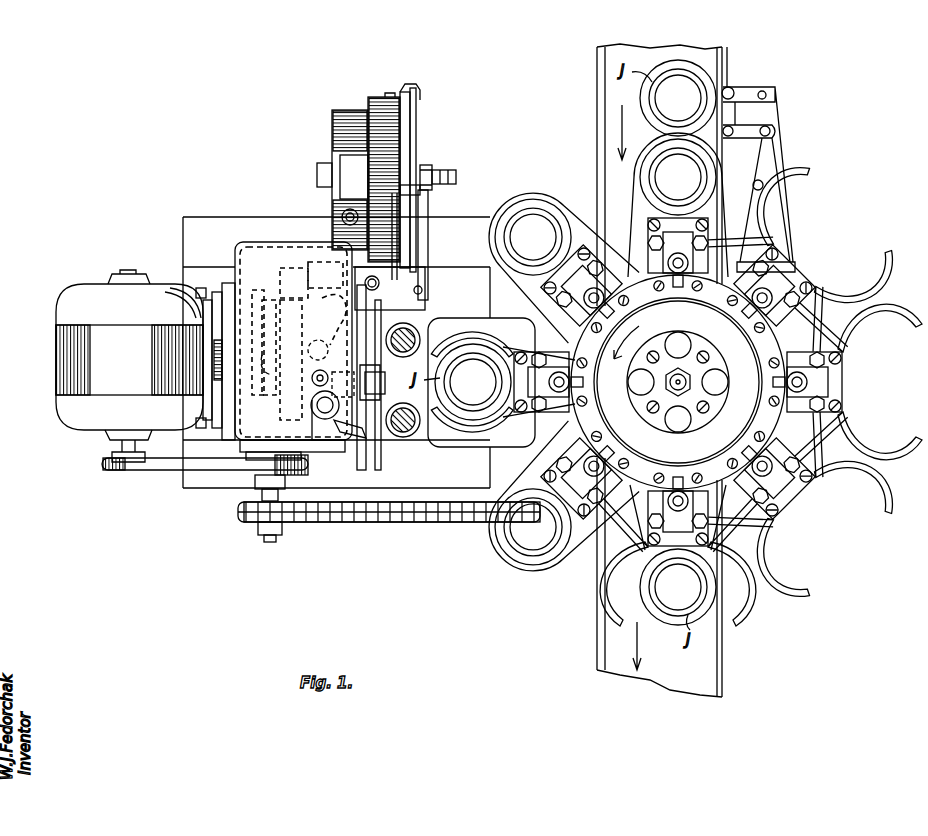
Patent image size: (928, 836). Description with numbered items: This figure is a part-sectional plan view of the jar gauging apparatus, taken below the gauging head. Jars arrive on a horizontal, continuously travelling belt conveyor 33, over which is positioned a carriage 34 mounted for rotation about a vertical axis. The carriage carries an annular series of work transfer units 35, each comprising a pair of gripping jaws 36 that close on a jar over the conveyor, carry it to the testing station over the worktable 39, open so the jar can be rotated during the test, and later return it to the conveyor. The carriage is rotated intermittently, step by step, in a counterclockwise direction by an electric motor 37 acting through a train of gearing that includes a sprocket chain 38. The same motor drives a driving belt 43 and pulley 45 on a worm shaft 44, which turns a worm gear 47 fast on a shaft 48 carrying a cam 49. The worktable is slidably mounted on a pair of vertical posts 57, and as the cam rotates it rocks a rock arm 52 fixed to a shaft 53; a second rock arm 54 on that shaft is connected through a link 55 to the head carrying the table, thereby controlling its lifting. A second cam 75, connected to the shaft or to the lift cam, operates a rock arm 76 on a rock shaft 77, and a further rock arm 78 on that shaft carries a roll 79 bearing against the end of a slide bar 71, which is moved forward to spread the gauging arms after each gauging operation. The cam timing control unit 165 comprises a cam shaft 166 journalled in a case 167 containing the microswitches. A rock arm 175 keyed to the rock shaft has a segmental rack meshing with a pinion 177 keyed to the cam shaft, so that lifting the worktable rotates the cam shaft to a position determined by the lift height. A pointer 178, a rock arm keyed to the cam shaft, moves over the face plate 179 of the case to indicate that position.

The belt conveyor 33 is at (612, 636).
The carriage 34 is at (730, 338).
The work transfer unit 35 is at (830, 384).
The gripping jaws 36 is at (476, 330).
The electric motor 37 is at (62, 353).
The sprocket chain 38 is at (432, 522).
The worktable 39 is at (495, 440).
The driving belt 43 is at (170, 468).
The worm shaft 44 is at (270, 542).
The pulley 45 is at (300, 470).
The worm gear 47 is at (258, 367).
The shaft 48 is at (262, 345).
The cam 49 is at (295, 405).
The rock arm 52 is at (299, 276).
The shaft 53 is at (330, 266).
The rock arm 54 is at (366, 318).
The link 55 is at (380, 385).
The vertical posts 57 is at (408, 432).
The slide bar 71 is at (350, 388).
The cam 75 is at (334, 307).
The rock arm 76 is at (330, 349).
The rock shaft 77 is at (324, 419).
The rock arm 78 is at (355, 431).
The roll 79 is at (327, 374).
The cam timing control unit 165 is at (354, 103).
The cam shaft 166 is at (457, 176).
The case 167 is at (390, 93).
The rock arm 175 is at (428, 208).
The pinion 177 is at (430, 167).
The pointer 178 is at (402, 130).
The face plate 179 is at (413, 104).